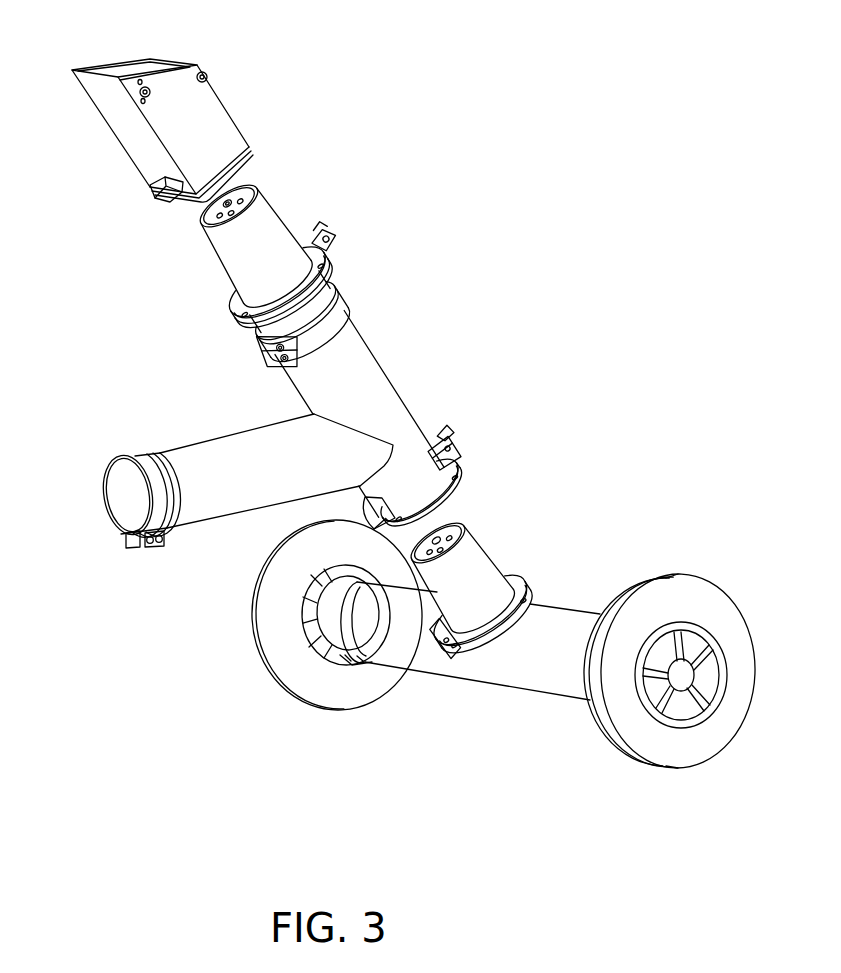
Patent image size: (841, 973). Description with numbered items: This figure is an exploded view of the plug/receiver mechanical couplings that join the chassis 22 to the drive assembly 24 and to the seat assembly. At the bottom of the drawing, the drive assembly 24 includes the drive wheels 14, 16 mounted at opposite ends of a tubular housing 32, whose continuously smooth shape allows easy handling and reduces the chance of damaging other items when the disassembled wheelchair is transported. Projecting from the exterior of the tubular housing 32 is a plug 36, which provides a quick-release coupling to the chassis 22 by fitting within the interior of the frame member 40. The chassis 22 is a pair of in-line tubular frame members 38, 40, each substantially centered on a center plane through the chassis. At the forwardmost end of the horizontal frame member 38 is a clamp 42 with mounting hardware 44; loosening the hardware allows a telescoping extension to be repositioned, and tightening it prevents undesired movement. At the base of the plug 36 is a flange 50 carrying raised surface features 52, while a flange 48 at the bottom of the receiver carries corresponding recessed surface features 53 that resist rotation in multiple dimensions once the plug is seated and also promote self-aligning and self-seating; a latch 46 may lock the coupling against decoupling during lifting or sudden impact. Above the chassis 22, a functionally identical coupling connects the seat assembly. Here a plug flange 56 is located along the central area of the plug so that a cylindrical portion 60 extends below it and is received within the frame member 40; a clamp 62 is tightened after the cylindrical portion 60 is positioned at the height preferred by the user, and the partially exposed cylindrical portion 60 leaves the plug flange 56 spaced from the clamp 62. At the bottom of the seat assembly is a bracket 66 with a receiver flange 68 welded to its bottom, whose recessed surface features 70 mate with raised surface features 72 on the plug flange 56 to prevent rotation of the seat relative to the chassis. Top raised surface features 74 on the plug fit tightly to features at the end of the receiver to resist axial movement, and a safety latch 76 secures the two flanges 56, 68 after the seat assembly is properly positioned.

The drive wheel 14 is at (625, 732).
The drive wheel 16 is at (325, 694).
The chassis 22 is at (440, 332).
The drive assembly 24 is at (547, 555).
The tubular housing 32 is at (535, 680).
The plug 36 is at (480, 568).
The horizontal frame member 38 is at (226, 450).
The frame member 40 is at (390, 410).
The clamp 42 is at (142, 455).
The mounting hardware 44 is at (158, 547).
The latch 46 is at (452, 456).
The flange 48 is at (446, 492).
The flange 50 is at (528, 591).
The raised surface features 52 is at (443, 645).
The recessed surface features 53 is at (377, 520).
The plug flange 56 is at (262, 226).
The cylindrical portion 60 is at (313, 298).
The clamp 62 is at (337, 317).
The bracket 66 is at (130, 150).
The receiver flange 68 is at (252, 158).
The recessed surface features 70 is at (160, 198).
The raised surface features 72 is at (248, 316).
The top raised surface features 74 is at (215, 211).
The safety latch 76 is at (312, 242).